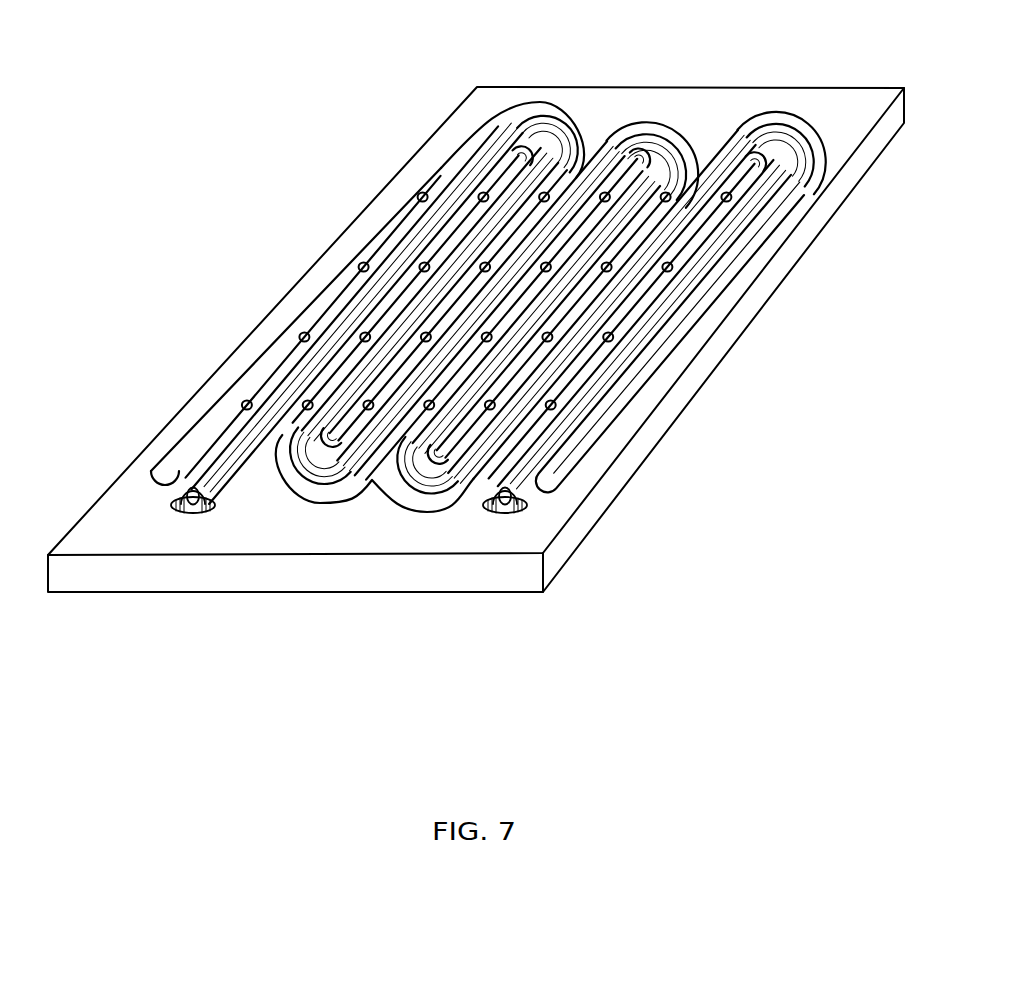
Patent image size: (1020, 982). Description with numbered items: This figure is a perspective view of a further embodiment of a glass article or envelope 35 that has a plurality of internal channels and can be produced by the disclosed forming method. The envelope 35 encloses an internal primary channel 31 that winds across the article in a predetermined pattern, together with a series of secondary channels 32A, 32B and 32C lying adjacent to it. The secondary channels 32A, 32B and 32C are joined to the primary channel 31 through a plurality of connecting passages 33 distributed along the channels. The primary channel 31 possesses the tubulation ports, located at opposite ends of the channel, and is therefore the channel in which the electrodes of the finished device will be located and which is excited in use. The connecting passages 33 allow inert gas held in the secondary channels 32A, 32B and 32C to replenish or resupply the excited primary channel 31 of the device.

The glass article or envelope 35 is at (663, 35).
The primary channel 31 is at (520, 213).
The secondary channel 32A is at (750, 238).
The secondary channel 32B is at (387, 482).
The secondary channel 32C is at (183, 452).
The connecting passages 33 is at (426, 337).